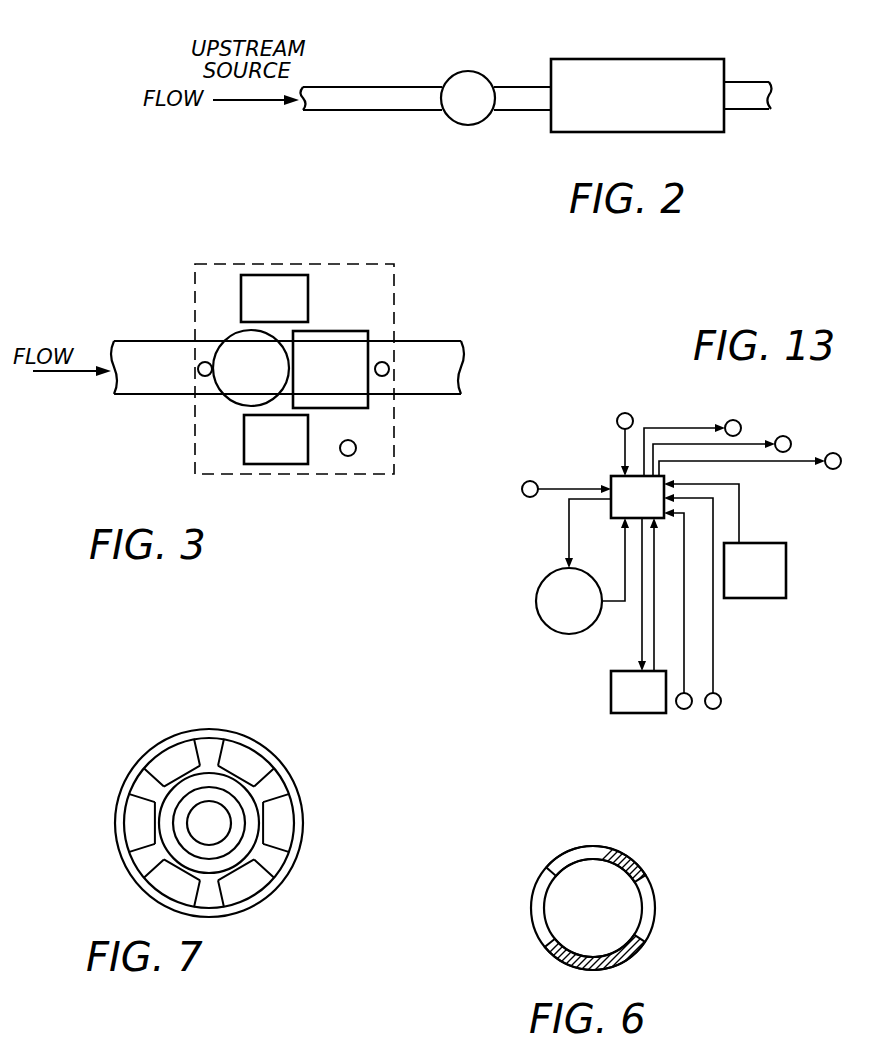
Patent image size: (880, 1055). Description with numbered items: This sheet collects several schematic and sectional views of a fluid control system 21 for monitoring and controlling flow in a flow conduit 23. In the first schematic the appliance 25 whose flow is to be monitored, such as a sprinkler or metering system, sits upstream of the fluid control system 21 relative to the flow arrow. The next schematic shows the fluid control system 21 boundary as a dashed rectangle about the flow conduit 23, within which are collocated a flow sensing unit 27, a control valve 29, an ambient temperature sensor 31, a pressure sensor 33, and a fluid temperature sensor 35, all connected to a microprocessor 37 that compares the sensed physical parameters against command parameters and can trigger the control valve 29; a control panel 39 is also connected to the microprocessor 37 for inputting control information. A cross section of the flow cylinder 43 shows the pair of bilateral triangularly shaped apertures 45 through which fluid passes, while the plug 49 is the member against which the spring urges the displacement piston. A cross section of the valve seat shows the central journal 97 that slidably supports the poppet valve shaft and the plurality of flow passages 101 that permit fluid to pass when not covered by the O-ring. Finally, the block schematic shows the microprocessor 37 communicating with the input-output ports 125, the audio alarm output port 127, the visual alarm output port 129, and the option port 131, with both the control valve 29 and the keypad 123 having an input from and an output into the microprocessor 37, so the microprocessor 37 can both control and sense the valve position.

In FIG. 2, the fluid control system 21 is at (583, 58).
In FIG. 3, the fluid control system 21 is at (357, 263).
In FIG. 2, the flow conduit 23 is at (372, 86).
In FIG. 3, the flow conduit 23 is at (133, 340).
In FIG. 2, the appliance 25 is at (463, 70).
In FIG. 3, the flow sensing unit 27 is at (333, 330).
In FIG. 13, the flow sensing unit 27 is at (785, 577).
In FIG. 3, the control valve 29 is at (230, 397).
In FIG. 13, the control valve 29 is at (537, 597).
In FIG. 3, the ambient temperature sensor 31 is at (349, 455).
In FIG. 13, the ambient temperature sensor 31 is at (683, 708).
In FIG. 3, the pressure sensor 33 is at (201, 361).
In FIG. 13, the pressure sensor 33 is at (533, 496).
In FIG. 3, the fluid temperature sensor 35 is at (388, 366).
In FIG. 13, the fluid temperature sensor 35 is at (719, 704).
In FIG. 3, the microprocessor 37 is at (270, 274).
In FIG. 13, the microprocessor 37 is at (610, 473).
In FIG. 3, the control panel 39 is at (283, 463).
In FIG. 6, the flow cylinder 43 is at (595, 843).
In FIG. 6, the triangularly shaped apertures 45 is at (535, 898).
In FIG. 7, the plug 49 is at (268, 747).
In FIG. 7, the journal 97 is at (192, 835).
In FIG. 7, the flow passages 101 is at (210, 748).
In FIG. 13, the keypad 123 is at (610, 685).
In FIG. 13, the input-output ports 125 is at (624, 412).
In FIG. 13, the audio alarm output port 127 is at (732, 419).
In FIG. 13, the visual alarm output port 129 is at (782, 435).
In FIG. 13, the option port 131 is at (832, 452).